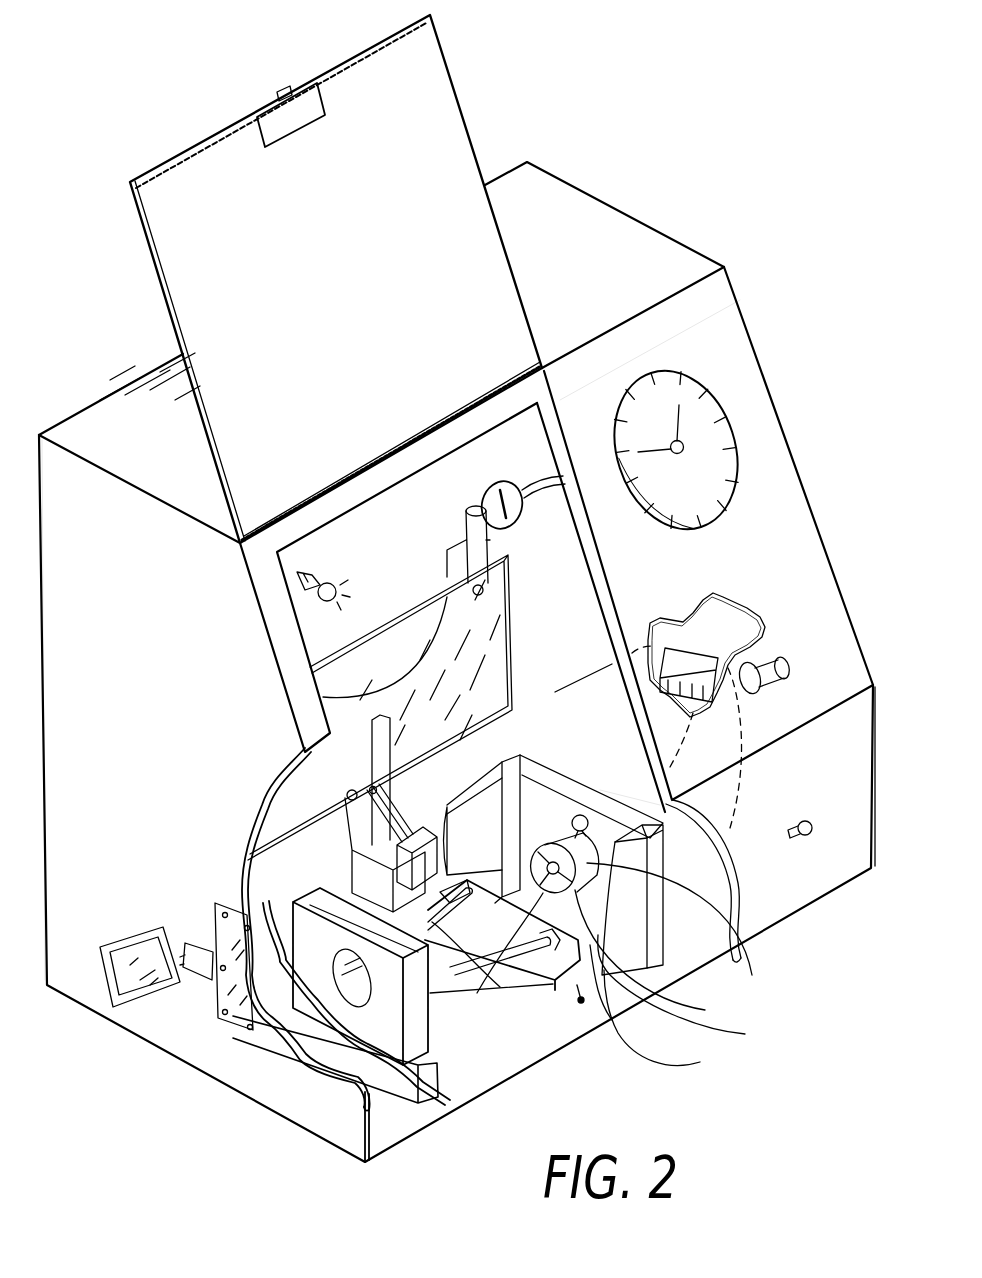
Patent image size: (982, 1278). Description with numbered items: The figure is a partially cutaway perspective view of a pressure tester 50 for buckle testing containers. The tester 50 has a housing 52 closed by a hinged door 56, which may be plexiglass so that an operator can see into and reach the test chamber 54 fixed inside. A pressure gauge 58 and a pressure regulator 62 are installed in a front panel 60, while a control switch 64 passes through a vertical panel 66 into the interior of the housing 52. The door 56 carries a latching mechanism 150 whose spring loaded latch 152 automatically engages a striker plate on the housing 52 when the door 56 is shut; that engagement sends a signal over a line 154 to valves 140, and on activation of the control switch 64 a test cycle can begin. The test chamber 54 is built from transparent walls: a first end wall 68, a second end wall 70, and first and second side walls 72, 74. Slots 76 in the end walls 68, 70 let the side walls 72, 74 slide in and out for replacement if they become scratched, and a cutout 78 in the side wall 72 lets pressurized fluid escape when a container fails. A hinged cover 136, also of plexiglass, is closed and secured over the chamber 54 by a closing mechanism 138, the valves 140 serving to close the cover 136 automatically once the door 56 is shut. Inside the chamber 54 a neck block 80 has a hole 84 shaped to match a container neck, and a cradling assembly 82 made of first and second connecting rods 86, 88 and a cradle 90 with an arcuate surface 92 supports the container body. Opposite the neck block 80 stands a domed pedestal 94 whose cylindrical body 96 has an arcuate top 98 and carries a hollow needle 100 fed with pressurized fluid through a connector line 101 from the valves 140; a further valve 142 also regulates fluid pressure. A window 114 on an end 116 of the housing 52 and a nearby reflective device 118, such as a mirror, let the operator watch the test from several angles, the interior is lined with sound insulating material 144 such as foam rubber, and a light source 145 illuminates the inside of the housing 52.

The pressure tester 50 is at (704, 187).
The housing 52 is at (628, 226).
The test chamber 54 is at (553, 805).
The hinged door 56 is at (448, 107).
The pressure gauge 58 is at (705, 400).
The front panel 60 is at (803, 490).
The pressure regulator 62 is at (790, 668).
The control switch 64 is at (811, 822).
The vertical panel 66 is at (848, 862).
The first end wall 68 is at (440, 1085).
The second end wall 70 is at (664, 938).
The first side wall 72 is at (530, 704).
The second side wall 74 is at (612, 1020).
The slots 76 is at (512, 758).
The cutout 78 is at (470, 840).
The neck block 80 is at (313, 897).
The cradling assembly 82 is at (492, 1002).
The hole 84 is at (370, 992).
The first connecting rod 86 is at (508, 985).
The second connecting rod 88 is at (437, 1005).
The cradle 90 is at (700, 1062).
The arcuate surface 92 is at (578, 1004).
The domed pedestal 94 is at (563, 832).
The cylindrical body 96 is at (745, 962).
The arcuate top 98 is at (705, 1010).
The hollow needle 100 is at (745, 1034).
The connector line 101 is at (632, 782).
The window 114 is at (227, 903).
The end 116 is at (129, 736).
The reflective device 118 is at (153, 925).
The hinged cover 136 is at (512, 580).
The closing mechanism 138 is at (410, 786).
The valves 140 is at (700, 650).
The valve 142 is at (464, 503).
The sound insulating material 144 is at (332, 580).
The light source 145 is at (298, 573).
The latching mechanism 150 is at (307, 100).
The spring loaded latch 152 is at (282, 92).
The line 154 is at (740, 807).